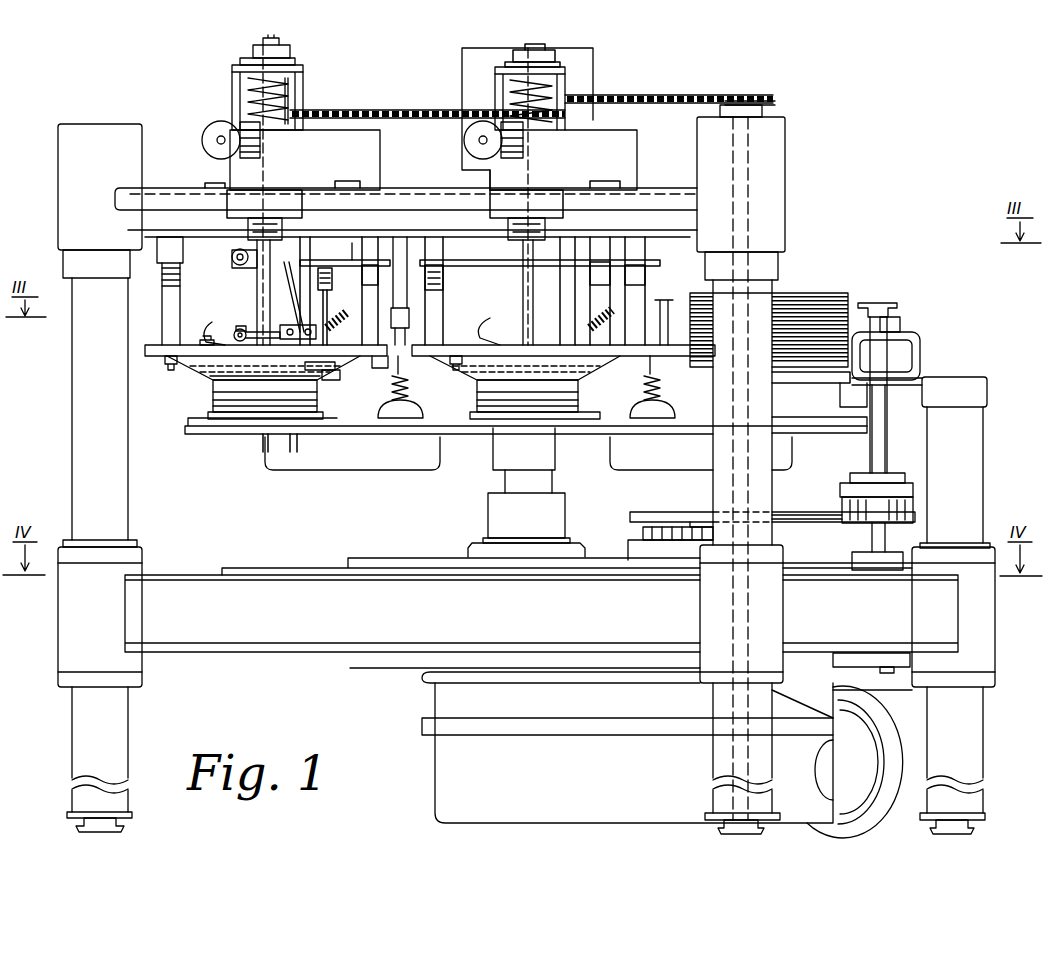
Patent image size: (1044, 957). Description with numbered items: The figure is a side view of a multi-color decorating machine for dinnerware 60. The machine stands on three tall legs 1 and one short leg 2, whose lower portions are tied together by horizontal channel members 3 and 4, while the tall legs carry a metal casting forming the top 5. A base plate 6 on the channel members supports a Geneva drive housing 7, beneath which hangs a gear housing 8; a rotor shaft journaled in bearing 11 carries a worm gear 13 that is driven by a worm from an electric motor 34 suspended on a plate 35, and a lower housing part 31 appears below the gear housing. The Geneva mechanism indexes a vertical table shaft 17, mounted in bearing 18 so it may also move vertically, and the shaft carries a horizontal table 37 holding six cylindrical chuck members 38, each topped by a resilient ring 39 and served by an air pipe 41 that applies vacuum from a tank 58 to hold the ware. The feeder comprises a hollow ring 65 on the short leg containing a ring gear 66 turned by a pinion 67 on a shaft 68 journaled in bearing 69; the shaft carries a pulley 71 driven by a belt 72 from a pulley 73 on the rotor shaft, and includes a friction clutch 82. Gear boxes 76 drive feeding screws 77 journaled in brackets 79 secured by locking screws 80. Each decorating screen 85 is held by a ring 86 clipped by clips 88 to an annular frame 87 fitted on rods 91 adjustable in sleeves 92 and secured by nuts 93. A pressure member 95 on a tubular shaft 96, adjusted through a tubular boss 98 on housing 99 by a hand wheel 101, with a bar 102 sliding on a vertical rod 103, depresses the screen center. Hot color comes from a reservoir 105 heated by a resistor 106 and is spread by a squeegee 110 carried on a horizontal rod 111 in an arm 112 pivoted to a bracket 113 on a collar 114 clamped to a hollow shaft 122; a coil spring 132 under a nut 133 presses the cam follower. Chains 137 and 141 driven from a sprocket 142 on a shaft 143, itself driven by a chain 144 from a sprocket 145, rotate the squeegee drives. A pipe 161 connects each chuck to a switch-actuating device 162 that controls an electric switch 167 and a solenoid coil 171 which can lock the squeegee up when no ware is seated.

The tall leg 1 is at (72, 415).
The short leg 2 is at (974, 453).
The horizontal channel member 3 is at (264, 643).
The horizontal channel member 4 is at (930, 623).
The top 5 is at (402, 186).
The base plate 6 is at (301, 568).
The Geneva drive housing 7 is at (372, 666).
The gear housing 8 is at (440, 699).
The bearing 11 is at (626, 558).
The worm gear 13 is at (400, 274).
The table shaft 17 is at (505, 482).
The bearing 18 is at (490, 518).
The gear housing 31 is at (450, 767).
The electric motor 34 is at (880, 750).
The plate 35 is at (915, 662).
The table 37 is at (190, 430).
The chuck member 38 is at (213, 400).
The resilient ring 39 is at (214, 378).
The air pipe 41 is at (265, 457).
The vacuum tank 58 is at (592, 71).
The dinnerware 60 is at (337, 380).
The hollow ring 65 is at (921, 370).
The ring gear 66 is at (917, 352).
The pinion 67 is at (918, 334).
The shaft 68 is at (886, 413).
The bearing 69 is at (860, 553).
The pulley 71 is at (850, 520).
The belt 72 is at (810, 515).
The pulley 73 is at (648, 512).
The gear box 76 is at (847, 396).
The feeding screw 77 is at (666, 320).
The bracket 79 is at (895, 317).
The locking screw 80 is at (879, 303).
The friction clutch 82 is at (887, 483).
The decorating screen 85 is at (190, 369).
The ring 86 is at (163, 362).
The annular frame 87 is at (152, 344).
The clip 88 is at (209, 339).
The rod 91 is at (162, 297).
The sleeve 92 is at (184, 247).
The nut 93 is at (382, 368).
The pressure member 95 is at (325, 370).
The tubular shaft 96 is at (257, 296).
The tubular boss 98 is at (303, 71).
The housing 99 is at (232, 169).
The hand wheel 101 is at (238, 62).
The bar 102 is at (253, 49).
The vertical rod 103 is at (282, 42).
The color reservoir 105 is at (350, 246).
The electrical resistor 106 is at (624, 318).
The squeegee 110 is at (346, 320).
The horizontal rod 111 is at (246, 327).
The arm 112 is at (304, 324).
The bracket 113 is at (298, 302).
The collar 114 is at (236, 263).
The hollow shaft 122 is at (246, 225).
The coil spring 132 is at (246, 100).
The nut 133 is at (296, 84).
The chain 137 is at (422, 92).
The chain 141 is at (660, 96).
The sprocket 142 is at (765, 107).
The shaft 143 is at (755, 140).
The chain 144 is at (699, 512).
The sprocket 145 is at (642, 530).
The pipe 161 is at (314, 456).
The switch-actuating device 162 is at (378, 406).
The electric switch 167 is at (405, 310).
The solenoid coil 171 is at (202, 140).